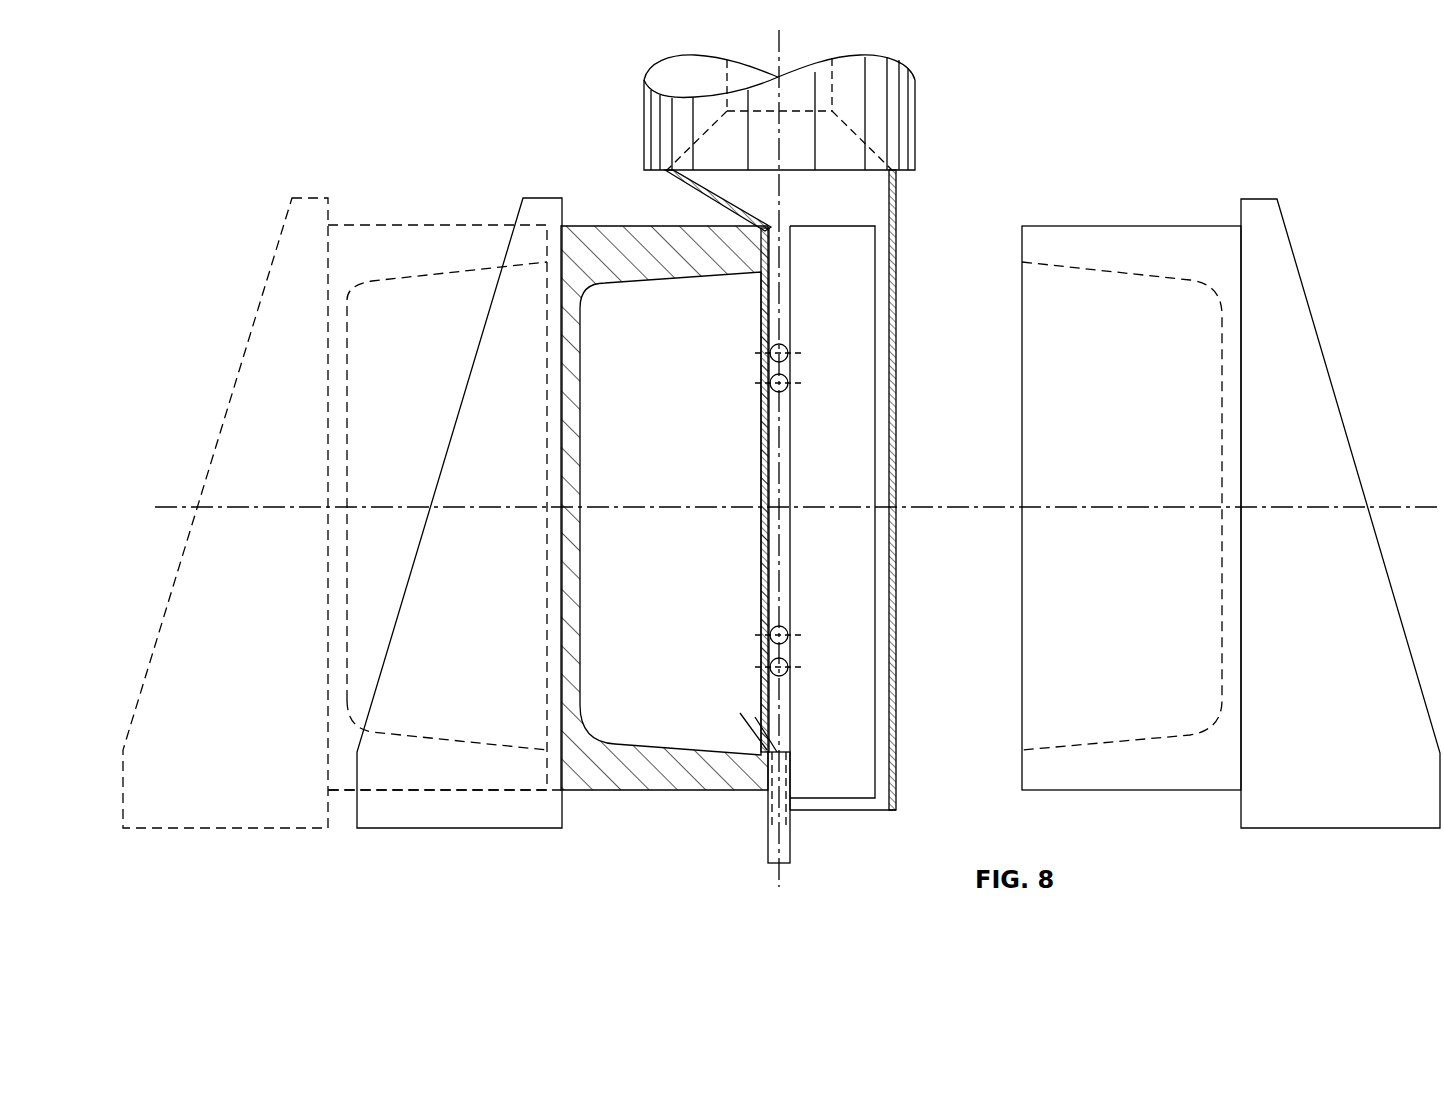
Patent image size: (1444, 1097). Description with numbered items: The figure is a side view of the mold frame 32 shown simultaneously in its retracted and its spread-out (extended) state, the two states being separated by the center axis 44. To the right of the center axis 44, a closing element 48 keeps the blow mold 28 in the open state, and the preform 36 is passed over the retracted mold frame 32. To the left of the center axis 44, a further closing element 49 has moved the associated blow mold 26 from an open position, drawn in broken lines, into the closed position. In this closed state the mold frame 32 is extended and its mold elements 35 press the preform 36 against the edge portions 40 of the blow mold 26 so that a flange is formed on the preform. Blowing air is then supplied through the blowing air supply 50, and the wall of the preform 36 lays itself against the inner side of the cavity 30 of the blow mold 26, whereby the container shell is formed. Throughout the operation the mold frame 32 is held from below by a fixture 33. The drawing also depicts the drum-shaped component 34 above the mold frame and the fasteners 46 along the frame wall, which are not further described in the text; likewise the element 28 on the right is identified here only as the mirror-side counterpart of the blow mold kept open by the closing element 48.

The blow mold 26 is at (420, 225).
The anode 28 is at (1158, 250).
The cavity 30 is at (690, 480).
The mold frame 32 is at (797, 555).
The fixture 33 is at (792, 848).
The drum 34 is at (915, 100).
The mold elements 35 is at (826, 228).
The preform 36 is at (897, 212).
The edge portions 40 is at (760, 280).
The center axis 44 is at (778, 38).
The fasteners 46 is at (788, 385).
The closing element 48 is at (1258, 208).
The further closing element 49 is at (310, 198).
The blowing air supply 50 is at (766, 826).